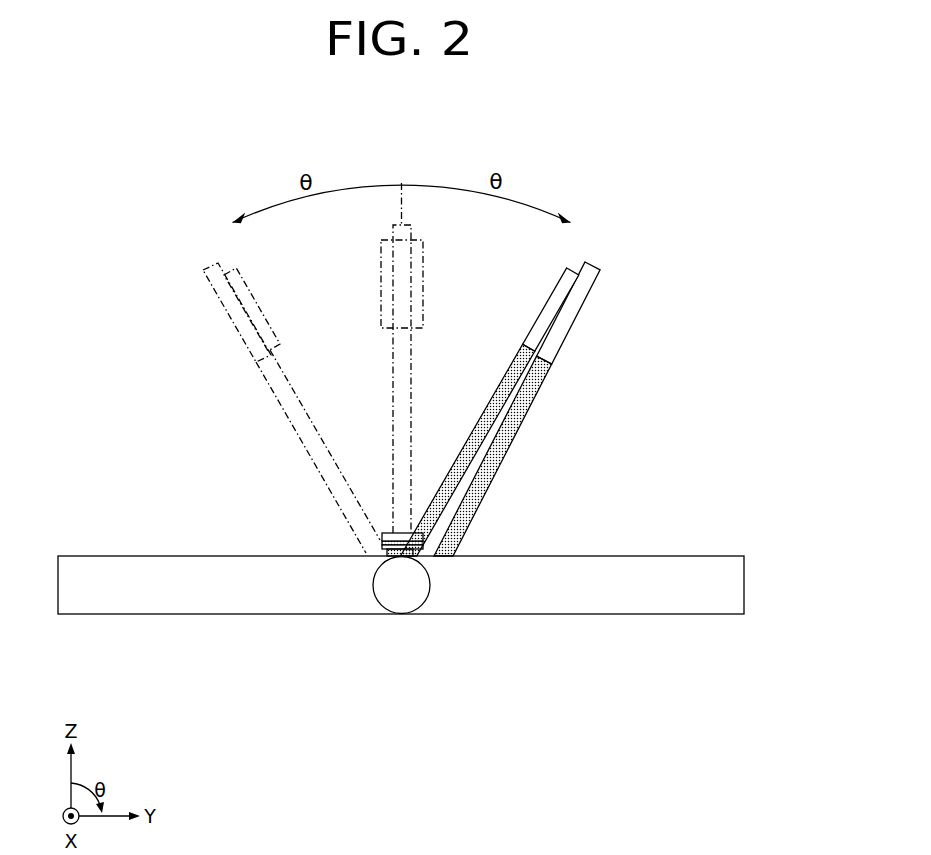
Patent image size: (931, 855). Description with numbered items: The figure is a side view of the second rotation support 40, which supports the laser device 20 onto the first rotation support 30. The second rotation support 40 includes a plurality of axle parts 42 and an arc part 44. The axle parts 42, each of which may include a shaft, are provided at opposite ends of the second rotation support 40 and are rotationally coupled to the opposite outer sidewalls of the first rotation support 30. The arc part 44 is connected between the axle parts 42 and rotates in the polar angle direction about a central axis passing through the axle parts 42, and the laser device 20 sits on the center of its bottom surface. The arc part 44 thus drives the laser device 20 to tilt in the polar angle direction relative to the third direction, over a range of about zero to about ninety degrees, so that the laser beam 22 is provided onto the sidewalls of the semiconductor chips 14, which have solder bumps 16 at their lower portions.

The semiconductor chips 14 is at (380, 537).
The solder bumps 16 is at (380, 546).
The laser device 20 is at (543, 409).
The laser beam 22 is at (502, 462).
The first rotation support 30 is at (733, 583).
The second rotation support 40 is at (484, 441).
The axle parts 42 is at (420, 588).
The arc part 44 is at (447, 508).